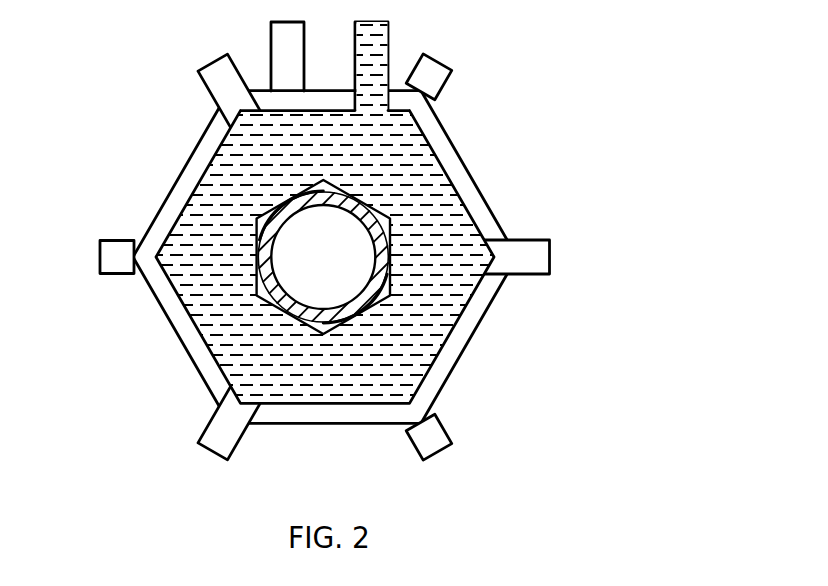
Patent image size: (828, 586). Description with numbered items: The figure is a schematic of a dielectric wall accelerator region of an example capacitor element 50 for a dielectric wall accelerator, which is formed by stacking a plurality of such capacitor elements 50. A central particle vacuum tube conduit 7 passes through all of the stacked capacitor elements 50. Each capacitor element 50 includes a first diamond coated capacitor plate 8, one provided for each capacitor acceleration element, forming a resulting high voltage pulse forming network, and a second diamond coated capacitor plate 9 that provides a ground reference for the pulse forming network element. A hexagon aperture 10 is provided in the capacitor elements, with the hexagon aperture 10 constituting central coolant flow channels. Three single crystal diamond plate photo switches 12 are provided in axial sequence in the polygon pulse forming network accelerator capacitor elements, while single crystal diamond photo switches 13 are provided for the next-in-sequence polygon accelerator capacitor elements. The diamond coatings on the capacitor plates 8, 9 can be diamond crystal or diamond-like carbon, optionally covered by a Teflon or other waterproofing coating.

The central particle vacuum tube conduit 7 is at (368, 313).
The first diamond coated capacitor plate 8 is at (422, 183).
The second diamond coated capacitor plate 9 is at (190, 172).
The hexagon aperture 10 is at (392, 218).
The single crystal diamond plate photo switches 12 is at (222, 82).
The single crystal diamond photo switches 13 is at (435, 83).
The capacitor element 50 is at (630, 98).